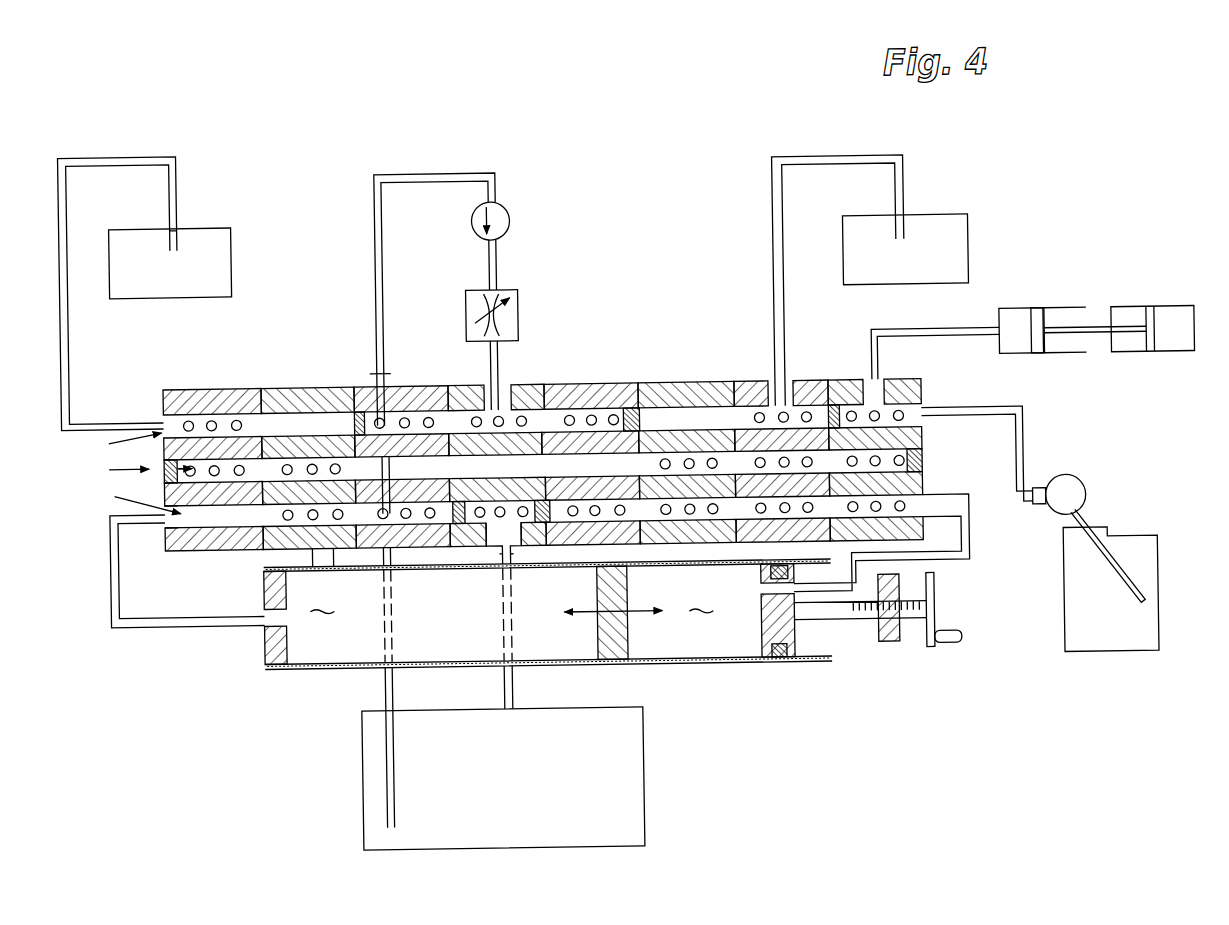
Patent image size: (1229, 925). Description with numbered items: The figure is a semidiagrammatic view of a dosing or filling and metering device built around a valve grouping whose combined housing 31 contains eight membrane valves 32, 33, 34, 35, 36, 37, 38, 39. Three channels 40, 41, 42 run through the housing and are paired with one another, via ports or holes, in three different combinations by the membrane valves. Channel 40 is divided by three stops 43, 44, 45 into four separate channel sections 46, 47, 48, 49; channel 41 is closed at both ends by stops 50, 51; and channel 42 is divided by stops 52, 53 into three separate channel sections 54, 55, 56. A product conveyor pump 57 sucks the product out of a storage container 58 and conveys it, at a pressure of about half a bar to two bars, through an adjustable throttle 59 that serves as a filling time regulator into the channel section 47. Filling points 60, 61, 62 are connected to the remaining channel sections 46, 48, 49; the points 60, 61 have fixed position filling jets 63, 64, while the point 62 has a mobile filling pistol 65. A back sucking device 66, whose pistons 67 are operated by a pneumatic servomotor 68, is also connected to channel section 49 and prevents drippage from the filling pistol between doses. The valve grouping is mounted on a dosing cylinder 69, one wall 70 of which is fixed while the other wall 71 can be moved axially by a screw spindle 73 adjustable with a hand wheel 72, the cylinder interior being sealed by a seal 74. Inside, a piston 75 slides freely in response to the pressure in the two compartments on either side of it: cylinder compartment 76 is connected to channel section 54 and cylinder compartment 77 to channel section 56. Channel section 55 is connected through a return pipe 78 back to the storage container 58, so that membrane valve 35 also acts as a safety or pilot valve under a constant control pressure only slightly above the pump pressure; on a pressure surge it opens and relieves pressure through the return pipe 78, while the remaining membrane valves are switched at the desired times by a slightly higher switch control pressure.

The combined housing 31 is at (640, 385).
The membrane valve 32 is at (222, 387).
The membrane valve 33 is at (318, 387).
The membrane valve 34 is at (426, 387).
The membrane valve 35 is at (537, 387).
The membrane valve 36 is at (592, 387).
The membrane valve 37 is at (697, 387).
The membrane valve 38 is at (818, 387).
The membrane valve 39 is at (915, 387).
The channel 40 is at (119, 306).
The channel 41 is at (130, 471).
The channel 42 is at (133, 501).
The stop 43 is at (345, 416).
The stop 44 is at (622, 414).
The stop 45 is at (832, 414).
The channel section 46 is at (268, 389).
The channel section 47 is at (458, 389).
The channel section 48 is at (720, 389).
The channel section 49 is at (918, 421).
The stop 50 is at (160, 466).
The stop 51 is at (914, 463).
The stop 52 is at (455, 522).
The stop 53 is at (510, 562).
The channel section 54 is at (226, 520).
The channel section 55 is at (540, 524).
The channel section 56 is at (912, 517).
The product conveyor pump 57 is at (511, 222).
The storage container 58 is at (637, 751).
The adjustable throttle 59 is at (520, 318).
The filling point 60 is at (211, 228).
The filling point 61 is at (922, 226).
The filling point 62 is at (1134, 543).
The filling jet 63 is at (170, 225).
The filling jet 64 is at (890, 226).
The mobile filling pistol 65 is at (1074, 490).
The back sucking device 66 is at (1016, 326).
The piston 67 is at (1038, 326).
The pneumatic servomotor 68 is at (1143, 320).
The dosing cylinder 69 is at (314, 672).
The wall 70 is at (260, 643).
The wall 71 is at (757, 632).
The hand wheel 72 is at (922, 632).
The graduated adjusting rod 73 is at (864, 630).
The seal 74 is at (780, 666).
The piston 75 is at (624, 640).
The cylinder compartment 76 is at (322, 601).
The cylinder compartment 77 is at (701, 601).
The return pipe 78 is at (513, 697).